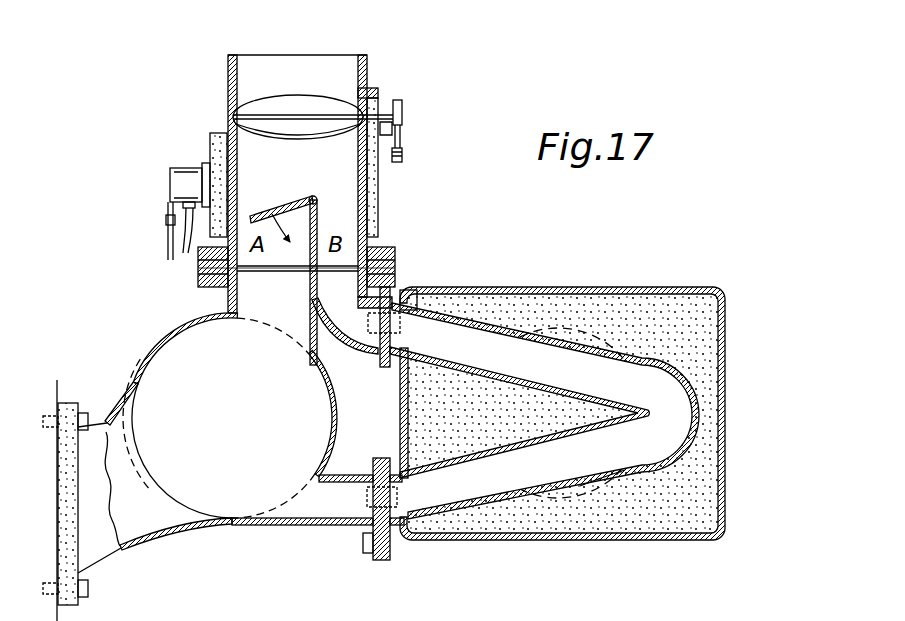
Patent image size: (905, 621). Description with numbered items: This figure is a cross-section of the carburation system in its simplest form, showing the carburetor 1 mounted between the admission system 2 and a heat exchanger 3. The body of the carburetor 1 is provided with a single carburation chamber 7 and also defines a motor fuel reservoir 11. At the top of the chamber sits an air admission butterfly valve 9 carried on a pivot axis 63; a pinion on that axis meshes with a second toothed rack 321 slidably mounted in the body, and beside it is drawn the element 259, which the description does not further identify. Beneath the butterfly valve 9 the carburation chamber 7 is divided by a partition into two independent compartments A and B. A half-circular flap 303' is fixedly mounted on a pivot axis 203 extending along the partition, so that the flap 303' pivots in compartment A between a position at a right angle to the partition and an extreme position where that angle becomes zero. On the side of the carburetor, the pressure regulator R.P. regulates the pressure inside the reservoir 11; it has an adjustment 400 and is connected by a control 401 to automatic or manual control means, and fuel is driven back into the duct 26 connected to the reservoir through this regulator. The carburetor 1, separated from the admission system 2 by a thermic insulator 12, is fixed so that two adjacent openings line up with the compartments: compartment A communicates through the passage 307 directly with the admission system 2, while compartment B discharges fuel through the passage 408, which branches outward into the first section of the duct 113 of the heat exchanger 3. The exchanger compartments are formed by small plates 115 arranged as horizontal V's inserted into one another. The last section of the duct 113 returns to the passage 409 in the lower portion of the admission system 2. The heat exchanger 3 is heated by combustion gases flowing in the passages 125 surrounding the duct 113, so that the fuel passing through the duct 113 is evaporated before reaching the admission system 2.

The carburetor body 1 is at (450, 213).
The admission system 2 is at (152, 352).
The heat exchanger 3 is at (732, 274).
The carburation chamber 7 is at (247, 143).
The air admission butterfly valve 9 is at (300, 100).
The motor fuel reservoir 11 is at (216, 140).
The thermic insulator 12 is at (392, 270).
The duct 26 is at (183, 238).
The pivot axis 63 is at (391, 104).
The duct 113 is at (470, 338).
The small plates 115 is at (568, 385).
The passages 125 is at (643, 432).
The pivot axis 203 is at (315, 200).
The adjusting rod 259 is at (403, 152).
The half-circular flap 303' is at (282, 197).
The passage 307 is at (242, 302).
The second toothed rack 321 is at (388, 130).
The adjustment 400 is at (172, 178).
The control 401 is at (168, 222).
The passage 408 is at (347, 326).
The passage 409 is at (328, 508).
The pressure regulator R.P. is at (182, 165).